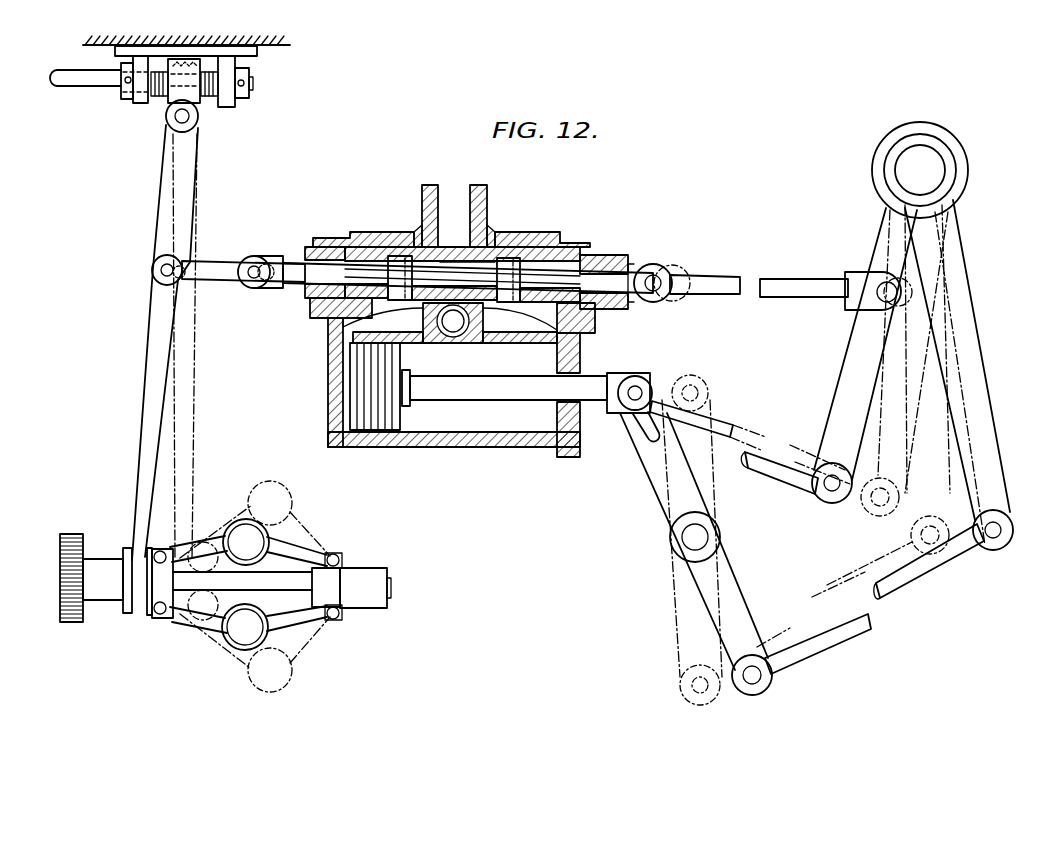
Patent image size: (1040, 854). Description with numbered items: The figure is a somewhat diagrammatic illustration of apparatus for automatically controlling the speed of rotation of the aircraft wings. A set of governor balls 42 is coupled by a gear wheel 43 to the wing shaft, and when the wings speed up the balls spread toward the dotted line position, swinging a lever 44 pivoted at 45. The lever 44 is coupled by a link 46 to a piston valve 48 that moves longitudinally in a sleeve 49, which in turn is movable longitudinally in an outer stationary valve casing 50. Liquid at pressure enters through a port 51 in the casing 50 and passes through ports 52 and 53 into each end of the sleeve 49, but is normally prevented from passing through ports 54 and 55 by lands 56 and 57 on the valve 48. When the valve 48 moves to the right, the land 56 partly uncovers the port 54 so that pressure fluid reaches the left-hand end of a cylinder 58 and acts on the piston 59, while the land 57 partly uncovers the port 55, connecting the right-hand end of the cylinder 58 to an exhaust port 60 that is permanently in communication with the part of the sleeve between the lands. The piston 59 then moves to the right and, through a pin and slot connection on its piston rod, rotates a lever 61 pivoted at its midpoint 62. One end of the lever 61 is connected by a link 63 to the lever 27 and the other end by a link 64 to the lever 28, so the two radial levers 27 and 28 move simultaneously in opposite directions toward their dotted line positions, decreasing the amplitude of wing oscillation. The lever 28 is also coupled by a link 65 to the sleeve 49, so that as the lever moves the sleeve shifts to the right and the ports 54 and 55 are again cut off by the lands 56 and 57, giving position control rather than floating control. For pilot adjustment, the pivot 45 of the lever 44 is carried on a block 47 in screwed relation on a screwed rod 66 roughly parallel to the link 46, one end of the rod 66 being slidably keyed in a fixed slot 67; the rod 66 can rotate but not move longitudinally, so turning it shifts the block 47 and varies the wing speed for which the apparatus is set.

The lever 27 is at (956, 354).
The lever 28 is at (877, 378).
The governor balls 42 is at (238, 524).
The gear wheel 43 is at (72, 535).
The lever 44 is at (176, 406).
The pivot 45 is at (187, 117).
The link 46 is at (224, 264).
The block 47 is at (177, 87).
The piston valve 48 is at (338, 262).
The sleeve 49 is at (490, 258).
The outer stationary valve casing 50 is at (376, 238).
The port 51 is at (455, 197).
The port 52 is at (370, 262).
The port 53 is at (548, 256).
The port 54 is at (336, 325).
The port 55 is at (586, 325).
The land 56 is at (396, 262).
The land 57 is at (513, 270).
The cylinder 58 is at (470, 446).
The piston 59 is at (378, 432).
The exhaust port 60 is at (455, 326).
The lever 61 is at (660, 487).
The pivot 62 is at (690, 540).
The link 63 is at (874, 590).
The link 64 is at (730, 412).
The link 65 is at (770, 285).
The screwed rod 66 is at (252, 90).
The fixed slot 67 is at (250, 72).